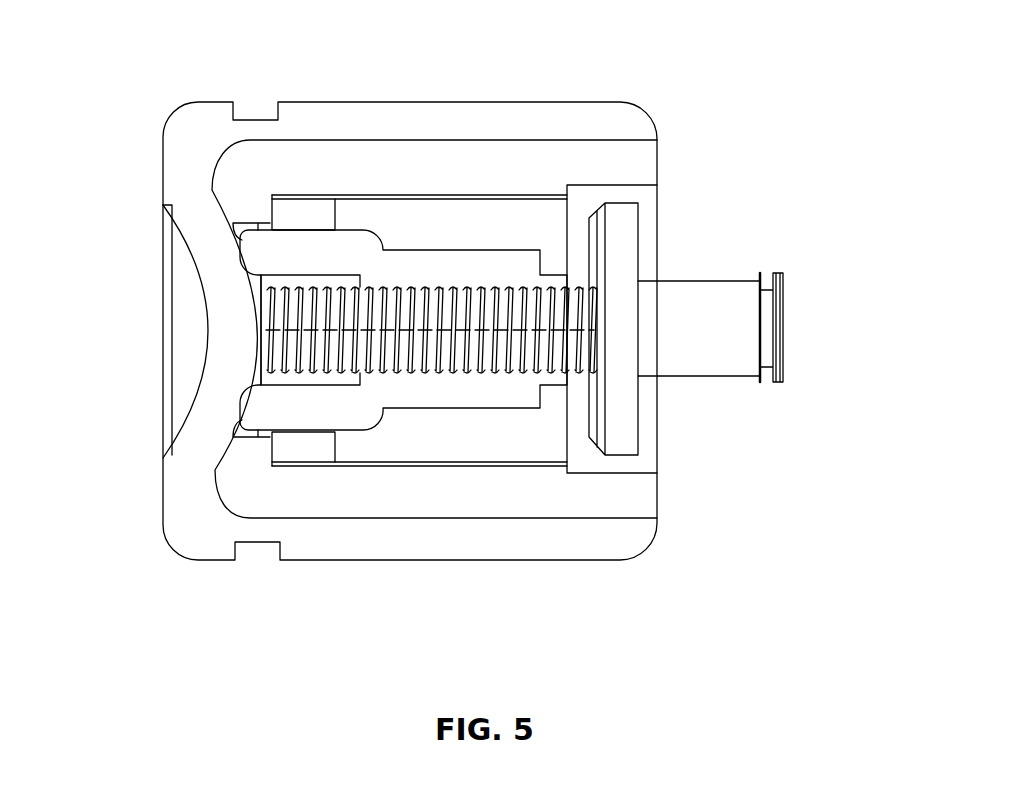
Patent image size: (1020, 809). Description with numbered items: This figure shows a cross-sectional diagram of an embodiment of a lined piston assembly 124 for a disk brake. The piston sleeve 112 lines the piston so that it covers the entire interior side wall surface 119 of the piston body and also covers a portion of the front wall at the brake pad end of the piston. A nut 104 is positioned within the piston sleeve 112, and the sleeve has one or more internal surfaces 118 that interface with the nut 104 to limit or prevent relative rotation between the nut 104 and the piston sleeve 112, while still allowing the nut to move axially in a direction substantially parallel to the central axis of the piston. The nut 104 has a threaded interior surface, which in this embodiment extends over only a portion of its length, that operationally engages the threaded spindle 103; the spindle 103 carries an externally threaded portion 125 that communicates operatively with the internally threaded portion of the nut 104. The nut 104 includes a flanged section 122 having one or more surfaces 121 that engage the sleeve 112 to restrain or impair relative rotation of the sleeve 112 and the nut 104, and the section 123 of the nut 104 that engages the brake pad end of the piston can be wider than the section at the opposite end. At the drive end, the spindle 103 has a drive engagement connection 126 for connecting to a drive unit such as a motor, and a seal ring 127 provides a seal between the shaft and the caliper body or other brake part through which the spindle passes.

The lined piston assembly 124 is at (664, 93).
The interior side wall surface 119 is at (597, 140).
The piston sleeve 112 is at (338, 509).
The nut 104 is at (277, 417).
The flanged section 122 is at (345, 218).
The section of the nut 123 is at (305, 252).
The surfaces 121 is at (347, 463).
The externally threaded portion 125 is at (428, 377).
The threaded spindle 103 is at (532, 292).
The internal surface 118 is at (553, 440).
The seal ring 127 is at (623, 422).
The drive engagement connection 126 is at (786, 352).